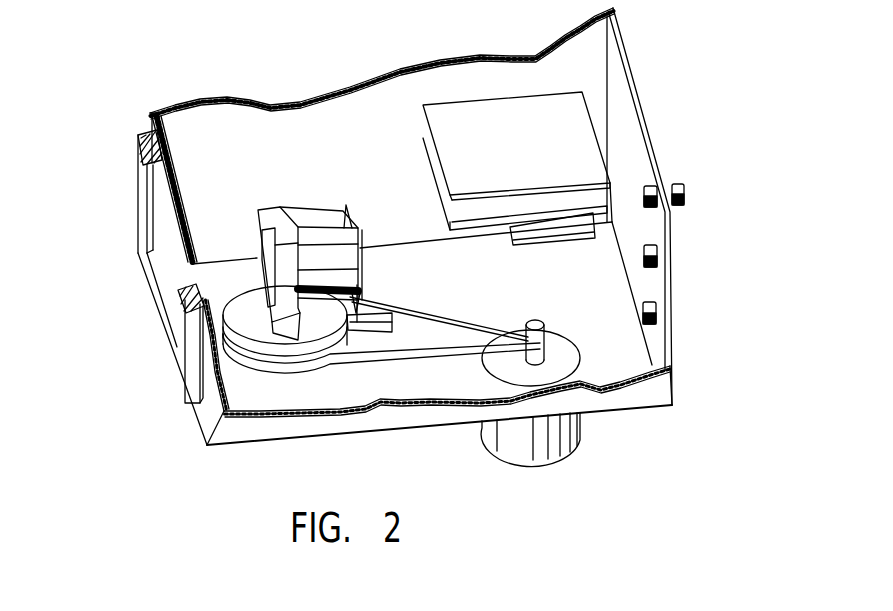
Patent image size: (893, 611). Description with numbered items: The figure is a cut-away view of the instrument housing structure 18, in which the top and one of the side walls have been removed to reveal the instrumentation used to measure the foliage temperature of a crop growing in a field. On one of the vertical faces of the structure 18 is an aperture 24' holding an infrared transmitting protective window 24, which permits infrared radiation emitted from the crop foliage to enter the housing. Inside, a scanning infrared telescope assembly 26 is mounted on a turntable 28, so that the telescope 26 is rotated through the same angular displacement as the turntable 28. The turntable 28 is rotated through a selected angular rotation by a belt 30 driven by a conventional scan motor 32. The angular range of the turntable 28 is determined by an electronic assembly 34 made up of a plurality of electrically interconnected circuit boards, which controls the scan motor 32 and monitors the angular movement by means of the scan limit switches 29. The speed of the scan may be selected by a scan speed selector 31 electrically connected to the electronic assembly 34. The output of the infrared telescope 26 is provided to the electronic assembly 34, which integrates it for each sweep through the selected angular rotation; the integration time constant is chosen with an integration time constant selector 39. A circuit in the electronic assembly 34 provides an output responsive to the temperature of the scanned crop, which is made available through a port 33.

The instrument housing structure 18 is at (263, 110).
The aperture 24' is at (122, 238).
The infrared transmitting protective window 24 is at (145, 338).
The scanning infrared telescope assembly 26 is at (283, 218).
The turntable 28 is at (292, 378).
The scan limit switches 29 is at (385, 300).
The belt 30 is at (407, 357).
The scan speed selector 31 is at (656, 258).
The scan motor 32 is at (583, 427).
The port 33 is at (657, 193).
The electronic assembly 34 is at (603, 205).
The integration time constant selector 39 is at (654, 320).